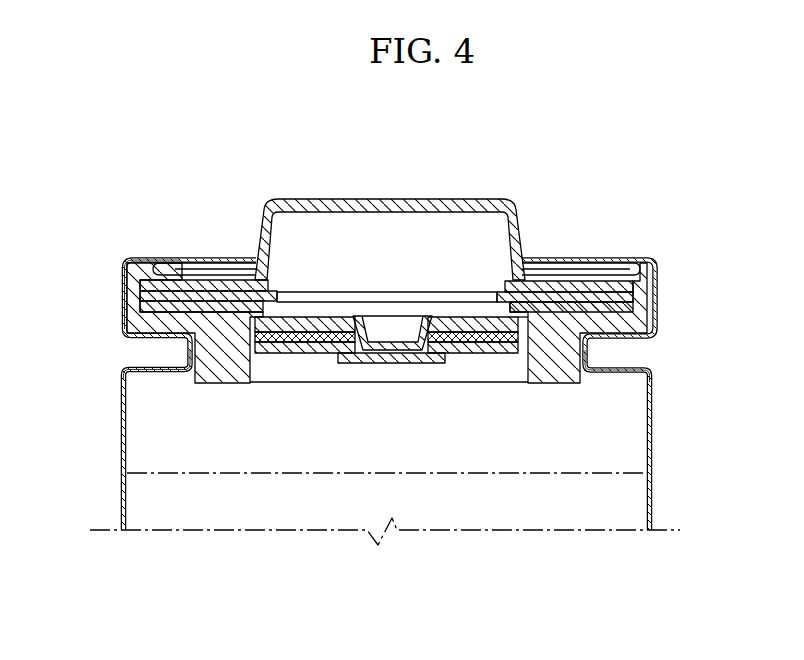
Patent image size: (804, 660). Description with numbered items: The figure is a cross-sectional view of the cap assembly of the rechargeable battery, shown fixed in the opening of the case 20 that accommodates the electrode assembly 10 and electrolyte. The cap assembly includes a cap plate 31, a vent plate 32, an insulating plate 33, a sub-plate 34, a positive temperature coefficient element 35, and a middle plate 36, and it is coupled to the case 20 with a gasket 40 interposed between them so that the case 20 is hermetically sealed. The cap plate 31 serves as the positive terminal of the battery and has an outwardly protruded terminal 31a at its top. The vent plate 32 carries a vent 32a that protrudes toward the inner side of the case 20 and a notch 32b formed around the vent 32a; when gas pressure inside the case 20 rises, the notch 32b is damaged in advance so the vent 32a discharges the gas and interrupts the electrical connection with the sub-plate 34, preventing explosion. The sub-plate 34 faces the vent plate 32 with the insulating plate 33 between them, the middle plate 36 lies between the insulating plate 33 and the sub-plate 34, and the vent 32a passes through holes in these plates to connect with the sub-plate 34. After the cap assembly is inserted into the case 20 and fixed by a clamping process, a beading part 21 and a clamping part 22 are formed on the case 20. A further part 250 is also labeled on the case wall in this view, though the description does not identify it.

The electrode assembly 10 is at (519, 511).
The case 20 is at (122, 456).
The beading part 21 is at (190, 350).
The clamping part 22 is at (121, 296).
The flange portion 250 is at (643, 373).
The cap plate 31 is at (567, 281).
The terminal 31a is at (331, 199).
The vent plate 32 is at (630, 300).
The vent 32a is at (387, 343).
The notch 32b is at (435, 316).
The insulating plate 33 is at (588, 342).
The sub-plate 34 is at (430, 338).
The positive temperature coefficient element 35 is at (610, 297).
The middle plate 36 is at (503, 340).
The gasket 40 is at (636, 322).